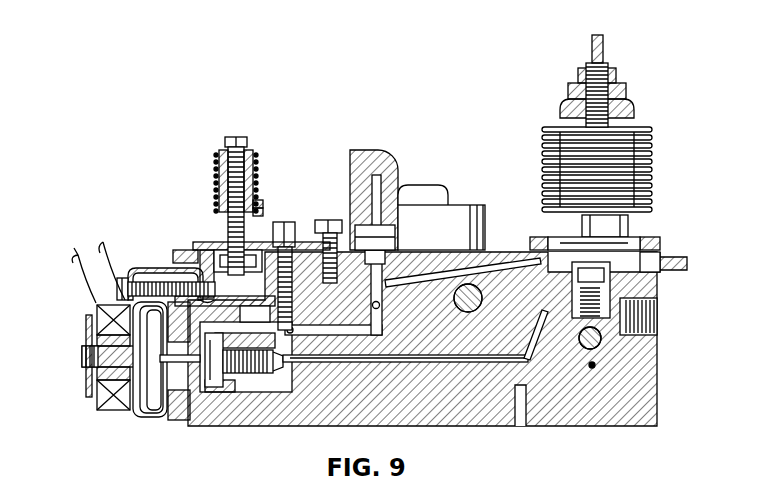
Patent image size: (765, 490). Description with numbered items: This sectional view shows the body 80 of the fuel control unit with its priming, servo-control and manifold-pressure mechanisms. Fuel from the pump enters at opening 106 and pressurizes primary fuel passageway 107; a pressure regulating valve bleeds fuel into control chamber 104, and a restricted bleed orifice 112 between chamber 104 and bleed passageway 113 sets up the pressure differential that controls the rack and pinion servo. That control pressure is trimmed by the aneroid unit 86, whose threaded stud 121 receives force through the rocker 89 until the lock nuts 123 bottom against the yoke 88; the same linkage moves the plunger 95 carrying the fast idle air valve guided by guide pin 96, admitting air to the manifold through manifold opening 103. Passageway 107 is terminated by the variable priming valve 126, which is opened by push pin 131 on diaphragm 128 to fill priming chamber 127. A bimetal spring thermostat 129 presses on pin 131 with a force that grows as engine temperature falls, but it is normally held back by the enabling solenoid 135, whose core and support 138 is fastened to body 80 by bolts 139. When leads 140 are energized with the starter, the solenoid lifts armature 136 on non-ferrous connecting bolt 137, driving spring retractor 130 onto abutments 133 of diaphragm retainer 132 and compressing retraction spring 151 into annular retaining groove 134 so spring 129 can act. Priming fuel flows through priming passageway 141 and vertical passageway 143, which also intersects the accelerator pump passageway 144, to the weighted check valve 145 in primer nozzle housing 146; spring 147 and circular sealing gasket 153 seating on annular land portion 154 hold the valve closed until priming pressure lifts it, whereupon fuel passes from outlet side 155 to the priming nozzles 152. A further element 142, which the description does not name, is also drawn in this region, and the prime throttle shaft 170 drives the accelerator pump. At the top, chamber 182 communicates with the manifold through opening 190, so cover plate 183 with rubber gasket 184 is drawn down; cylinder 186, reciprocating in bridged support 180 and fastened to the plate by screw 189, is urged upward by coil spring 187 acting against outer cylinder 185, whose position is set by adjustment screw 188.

The body 80 is at (480, 341).
The aneroid unit 86 is at (652, 167).
The yoke 88 is at (632, 113).
The rocker 89 is at (602, 44).
The plunger 95 is at (603, 343).
The guide pin 96 is at (593, 369).
The manifold opening 103 is at (520, 420).
The control chamber 104 is at (637, 264).
The opening 106 is at (640, 323).
The primary fuel passageway 107 is at (402, 361).
The restricted bleed orifice 112 is at (542, 262).
The bleed passageway 113 is at (500, 318).
The threaded stud 121 is at (622, 89).
The lock nuts 123 is at (568, 90).
The variable priming valve 126 is at (290, 362).
The priming chamber 127 is at (232, 393).
The diaphragm 128 is at (200, 400).
The bimetal spring thermostat 129 is at (148, 410).
The spring retractor 130 is at (173, 414).
The push pin 131 is at (220, 380).
The diaphragm retainer 132 is at (195, 426).
The abutments 133 is at (190, 420).
The annular retaining groove 134 is at (212, 306).
The enabling solenoid 135 is at (112, 408).
The armature 136 is at (86, 396).
The non-ferrous connecting bolt 137 is at (82, 356).
The solenoid core and support 138 is at (158, 418).
The bolts 139 is at (128, 280).
The leads 140 is at (126, 271).
The priming passageway 141 is at (262, 322).
The screw 142 is at (296, 227).
The vertical passageway 143 is at (371, 300).
The passageway 144 is at (380, 306).
The weighted check valve 145 is at (393, 232).
The primer nozzle housing 146 is at (398, 166).
The spring 147 is at (405, 238).
The retraction spring 151 is at (214, 298).
The priming nozzles 152 is at (350, 210).
The circular sealing gasket 153 is at (410, 276).
The annular land portion 154 is at (385, 256).
The outlet side 155 is at (382, 180).
The prime throttle shaft 170 is at (330, 286).
The bridged support 180 is at (216, 212).
The chamber 182 is at (252, 298).
The cover plate 183 is at (258, 242).
The rubber gasket 184 is at (195, 244).
The outer cylinder 185 is at (255, 152).
The cylinder 186 is at (258, 214).
The coil spring 187 is at (258, 199).
The adjustment screw 188 is at (246, 137).
The screw 189 is at (242, 258).
The opening 190 is at (244, 291).